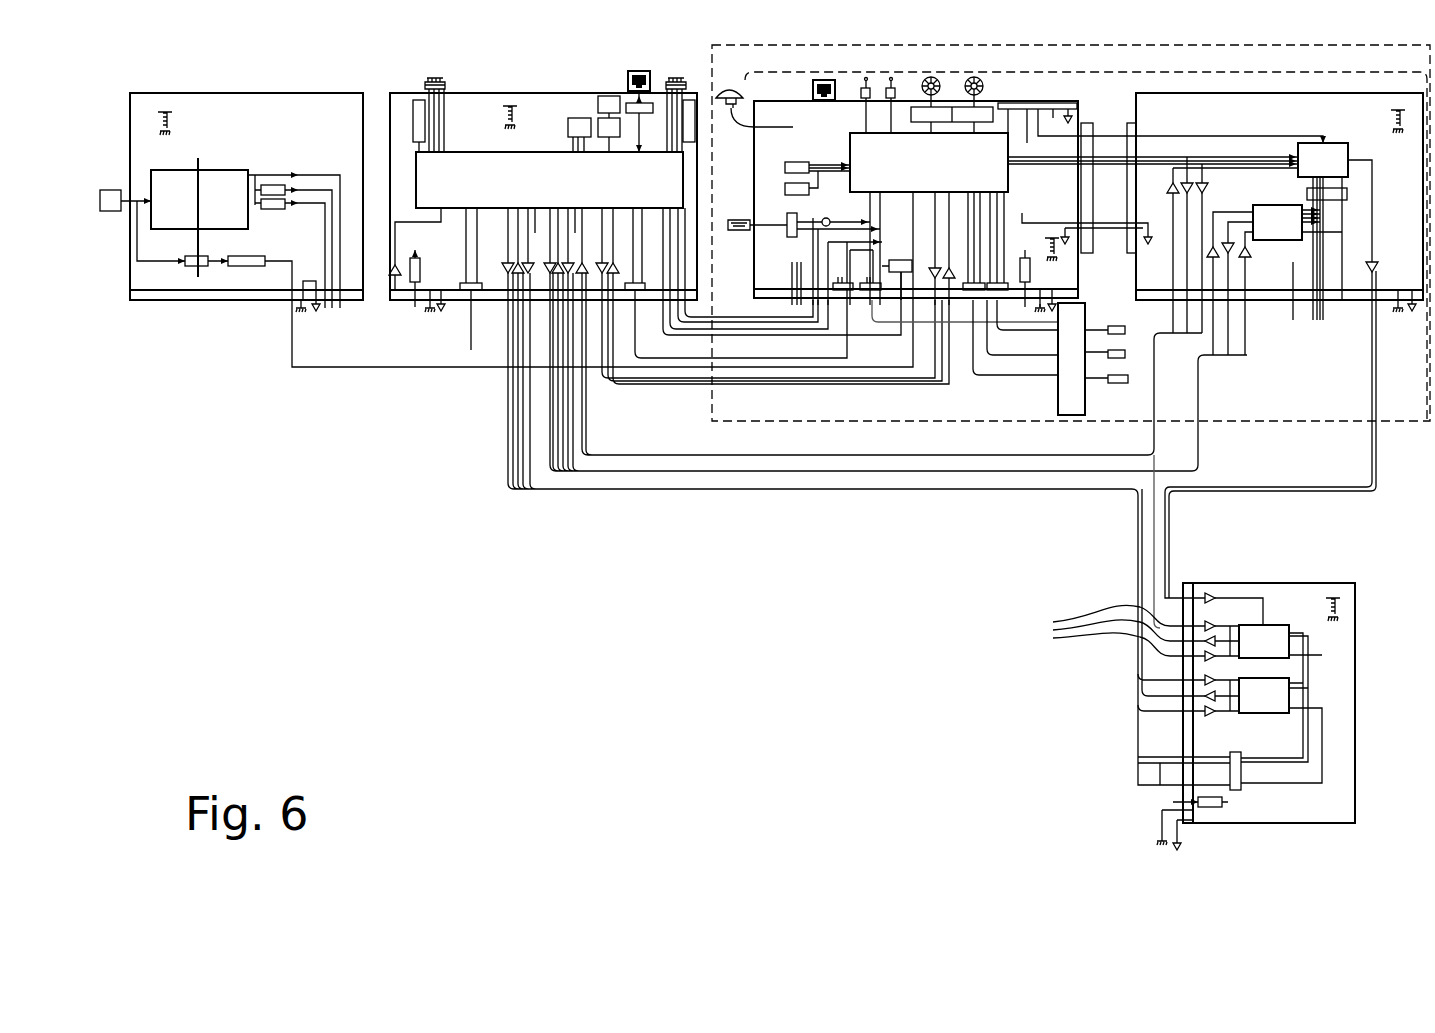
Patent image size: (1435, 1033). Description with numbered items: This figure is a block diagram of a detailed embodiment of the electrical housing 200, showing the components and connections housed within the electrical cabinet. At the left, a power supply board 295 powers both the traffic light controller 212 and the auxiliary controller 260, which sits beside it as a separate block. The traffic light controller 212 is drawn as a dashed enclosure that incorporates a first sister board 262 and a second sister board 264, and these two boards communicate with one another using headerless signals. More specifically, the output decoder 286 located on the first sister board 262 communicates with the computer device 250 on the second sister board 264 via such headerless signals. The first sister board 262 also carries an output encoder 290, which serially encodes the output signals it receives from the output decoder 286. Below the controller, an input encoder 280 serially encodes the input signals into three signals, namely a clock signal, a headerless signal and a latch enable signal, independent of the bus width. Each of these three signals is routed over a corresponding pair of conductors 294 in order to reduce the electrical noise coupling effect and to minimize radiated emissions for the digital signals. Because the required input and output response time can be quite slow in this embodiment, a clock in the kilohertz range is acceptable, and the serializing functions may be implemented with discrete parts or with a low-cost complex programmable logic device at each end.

The electrical housing 200 is at (524, 575).
The traffic light controller 212 is at (808, 425).
The computer device 250 is at (946, 174).
The auxiliary controller 260 is at (560, 195).
The first sister board 262 is at (1240, 126).
The second sister board 264 is at (843, 138).
The input encoder 280 is at (1275, 633).
The output decoder 286 is at (1330, 150).
The output encoder 290 is at (1266, 216).
The pair of conductors 294 is at (1107, 630).
The power supply board 295 is at (246, 338).